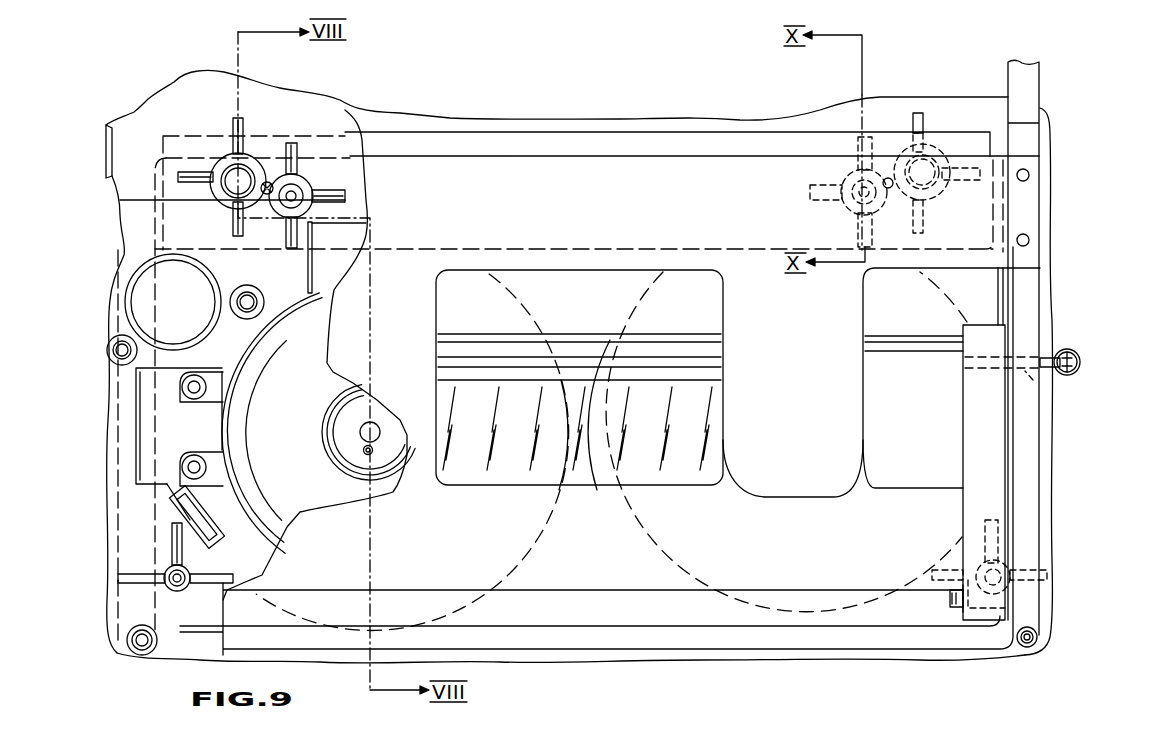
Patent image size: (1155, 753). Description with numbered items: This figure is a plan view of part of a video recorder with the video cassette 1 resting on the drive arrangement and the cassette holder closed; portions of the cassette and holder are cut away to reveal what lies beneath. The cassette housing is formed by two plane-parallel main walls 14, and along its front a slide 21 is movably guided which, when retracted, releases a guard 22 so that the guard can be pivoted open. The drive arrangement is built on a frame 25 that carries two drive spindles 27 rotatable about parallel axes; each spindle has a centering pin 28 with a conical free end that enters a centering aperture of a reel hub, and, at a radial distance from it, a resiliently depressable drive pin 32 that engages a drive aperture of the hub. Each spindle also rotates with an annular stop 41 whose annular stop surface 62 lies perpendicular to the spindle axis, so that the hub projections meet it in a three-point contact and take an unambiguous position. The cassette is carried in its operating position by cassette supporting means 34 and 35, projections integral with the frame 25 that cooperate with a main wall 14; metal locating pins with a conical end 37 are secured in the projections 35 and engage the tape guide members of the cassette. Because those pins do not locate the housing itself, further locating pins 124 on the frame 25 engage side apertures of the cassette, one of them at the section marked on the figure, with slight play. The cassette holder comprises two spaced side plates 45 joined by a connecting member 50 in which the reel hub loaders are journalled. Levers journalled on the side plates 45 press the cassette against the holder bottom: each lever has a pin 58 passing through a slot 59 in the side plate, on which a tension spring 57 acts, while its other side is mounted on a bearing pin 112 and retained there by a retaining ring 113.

The video cassette 1 is at (586, 666).
The main wall 14 is at (728, 572).
The slide 21 is at (977, 293).
The guard 22 is at (529, 145).
The frame 25 is at (338, 110).
The drive spindle 27 is at (318, 376).
The centering pin 28 is at (366, 430).
The drive pin 32 is at (358, 452).
The cassette supporting means 34 is at (172, 572).
The cassette supporting means 35 is at (248, 166).
The conical end 37 is at (232, 174).
The annular stop 41 is at (320, 404).
The side plate 45 is at (1024, 83).
The connecting member 50 is at (606, 170).
The tension spring 57 is at (1072, 352).
The pin 58 is at (1052, 355).
The slot 59 is at (1033, 380).
The annular stop surface 62 is at (327, 416).
The bearing pin 112 is at (952, 598).
The retaining ring 113 is at (962, 608).
The locating pin 124 is at (297, 188).